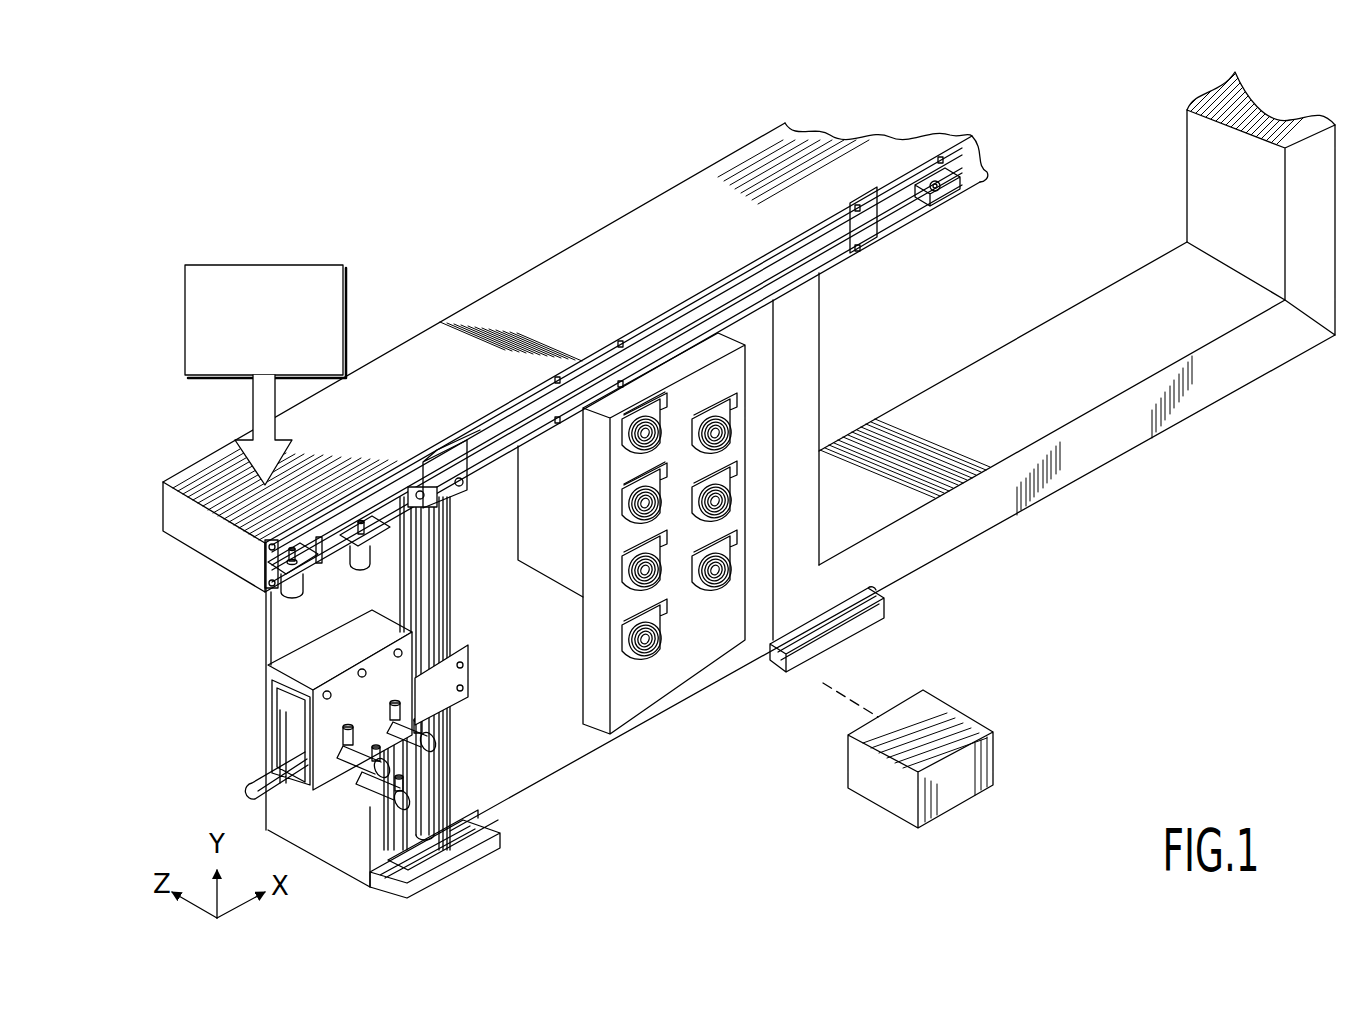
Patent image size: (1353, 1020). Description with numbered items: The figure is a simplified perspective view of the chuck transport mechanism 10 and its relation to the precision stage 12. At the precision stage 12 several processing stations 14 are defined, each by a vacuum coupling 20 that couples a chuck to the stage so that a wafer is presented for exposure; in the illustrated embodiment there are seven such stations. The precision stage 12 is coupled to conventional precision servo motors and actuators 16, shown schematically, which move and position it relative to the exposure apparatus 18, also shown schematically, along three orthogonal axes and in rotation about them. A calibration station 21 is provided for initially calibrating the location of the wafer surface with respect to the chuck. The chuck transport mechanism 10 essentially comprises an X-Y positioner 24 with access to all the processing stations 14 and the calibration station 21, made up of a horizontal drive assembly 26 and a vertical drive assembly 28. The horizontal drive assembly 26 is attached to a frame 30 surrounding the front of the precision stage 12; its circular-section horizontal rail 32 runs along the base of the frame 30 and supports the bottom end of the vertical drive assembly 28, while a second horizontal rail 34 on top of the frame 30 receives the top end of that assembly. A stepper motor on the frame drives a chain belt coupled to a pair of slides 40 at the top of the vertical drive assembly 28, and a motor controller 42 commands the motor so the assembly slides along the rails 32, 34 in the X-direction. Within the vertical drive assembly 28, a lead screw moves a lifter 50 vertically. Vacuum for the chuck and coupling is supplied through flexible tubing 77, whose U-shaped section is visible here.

The chuck transport mechanism 10 is at (578, 225).
The precision stage 12 is at (586, 648).
The processing stations 14 is at (706, 604).
The precision servo motors and actuators 16 is at (514, 556).
The exposure apparatus 18 is at (950, 718).
The vacuum coupling 20 is at (645, 503).
The calibration station 21 is at (262, 672).
The X-Y positioner 24 is at (465, 768).
The horizontal drive assembly 26 is at (470, 410).
The vertical drive assembly 28 is at (452, 604).
The frame 30 is at (688, 207).
The horizontal rail 32 is at (572, 772).
The horizontal rail 34 is at (822, 260).
The slides 40 is at (458, 470).
The motor controller 42 is at (186, 305).
The lifter 50 is at (448, 690).
The flexible tubing 77 is at (258, 786).